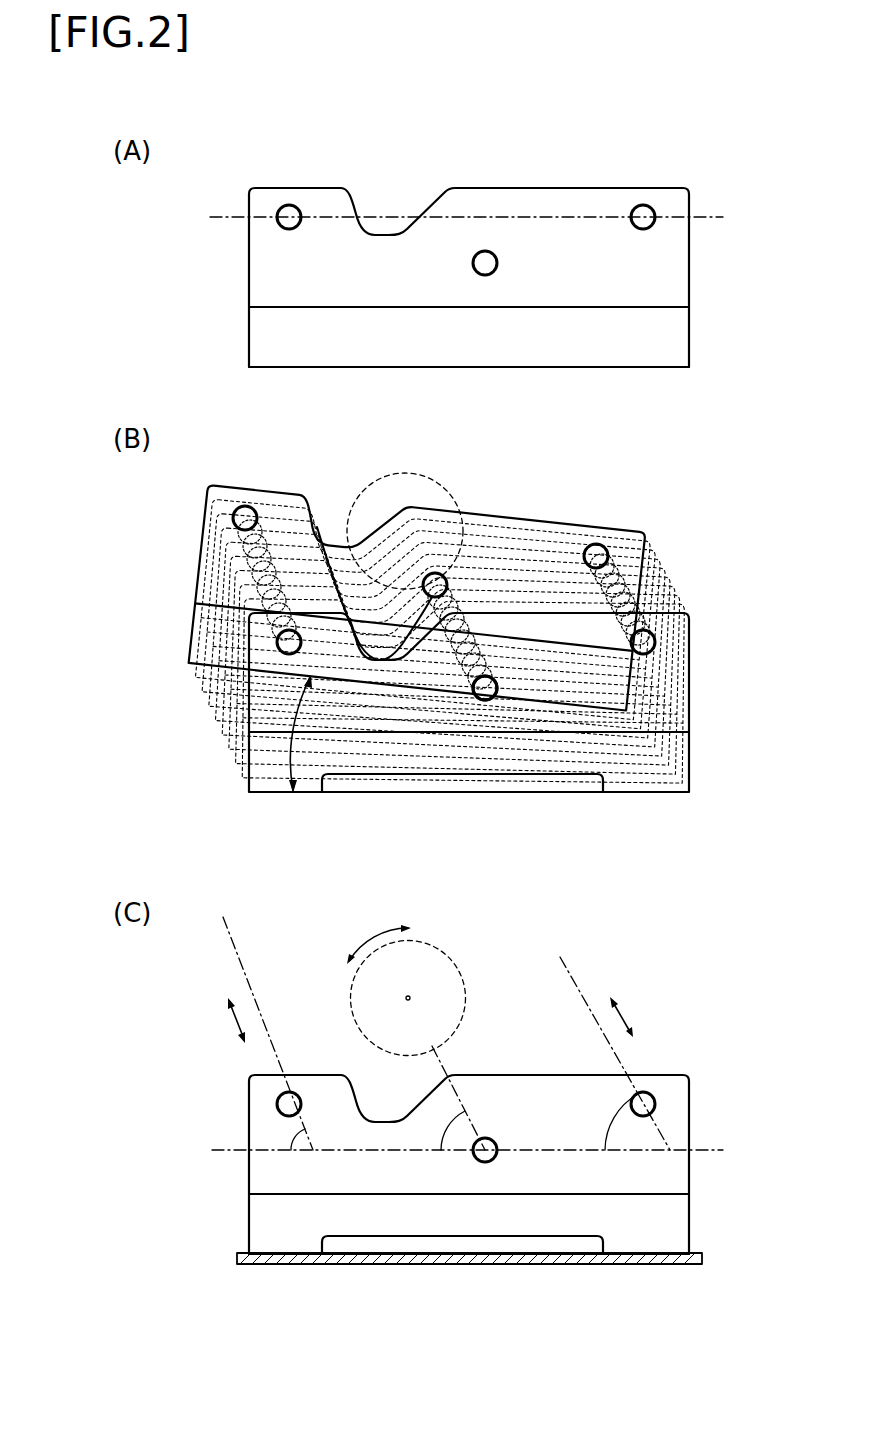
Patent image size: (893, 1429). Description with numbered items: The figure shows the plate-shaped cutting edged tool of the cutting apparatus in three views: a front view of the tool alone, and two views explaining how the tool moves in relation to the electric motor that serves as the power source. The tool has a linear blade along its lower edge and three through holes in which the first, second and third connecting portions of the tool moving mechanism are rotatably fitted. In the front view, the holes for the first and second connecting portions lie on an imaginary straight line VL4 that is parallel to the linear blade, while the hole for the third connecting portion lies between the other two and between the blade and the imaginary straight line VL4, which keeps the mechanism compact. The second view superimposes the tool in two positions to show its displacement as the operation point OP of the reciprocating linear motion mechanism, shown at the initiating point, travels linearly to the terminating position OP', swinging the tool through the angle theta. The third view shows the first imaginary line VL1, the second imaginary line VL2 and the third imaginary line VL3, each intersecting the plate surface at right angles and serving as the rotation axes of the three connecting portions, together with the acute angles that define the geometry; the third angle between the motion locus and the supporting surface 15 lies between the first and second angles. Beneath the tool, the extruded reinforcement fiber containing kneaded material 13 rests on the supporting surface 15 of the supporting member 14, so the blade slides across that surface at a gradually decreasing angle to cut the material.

The imaginary straight line VL4 is at (707, 215).
The first imaginary line VL1 is at (658, 1100).
The second imaginary line VL2 is at (280, 1106).
The third imaginary line VL3 is at (490, 1135).
The operation point OP is at (436, 563).
The operation point at terminating position OP' is at (514, 763).
The extruded reinforcement fiber containing kneaded material 13 is at (511, 1243).
The supporting member 14 is at (661, 1256).
The supporting surface 15 is at (695, 1250).